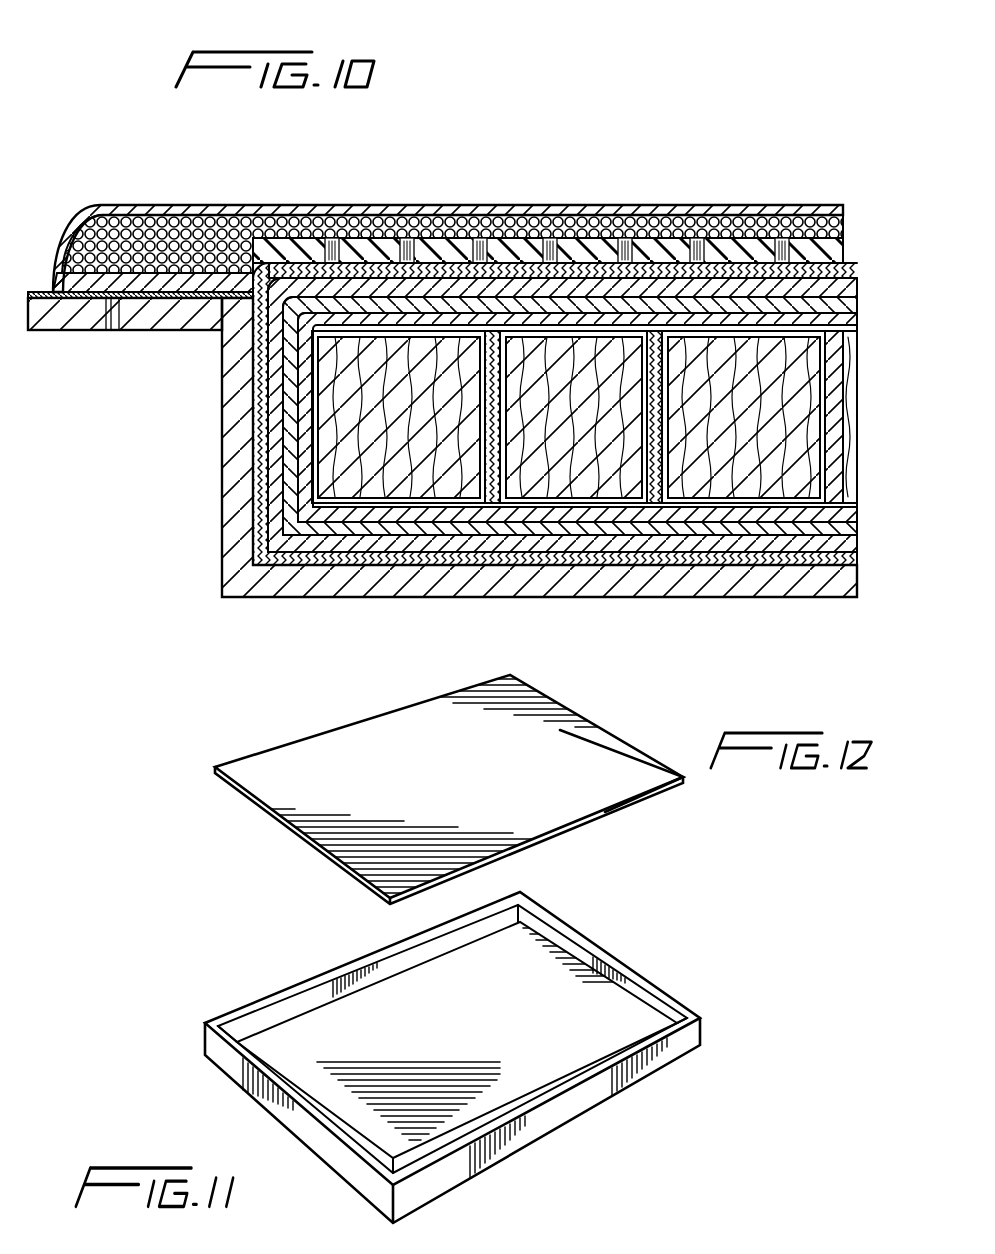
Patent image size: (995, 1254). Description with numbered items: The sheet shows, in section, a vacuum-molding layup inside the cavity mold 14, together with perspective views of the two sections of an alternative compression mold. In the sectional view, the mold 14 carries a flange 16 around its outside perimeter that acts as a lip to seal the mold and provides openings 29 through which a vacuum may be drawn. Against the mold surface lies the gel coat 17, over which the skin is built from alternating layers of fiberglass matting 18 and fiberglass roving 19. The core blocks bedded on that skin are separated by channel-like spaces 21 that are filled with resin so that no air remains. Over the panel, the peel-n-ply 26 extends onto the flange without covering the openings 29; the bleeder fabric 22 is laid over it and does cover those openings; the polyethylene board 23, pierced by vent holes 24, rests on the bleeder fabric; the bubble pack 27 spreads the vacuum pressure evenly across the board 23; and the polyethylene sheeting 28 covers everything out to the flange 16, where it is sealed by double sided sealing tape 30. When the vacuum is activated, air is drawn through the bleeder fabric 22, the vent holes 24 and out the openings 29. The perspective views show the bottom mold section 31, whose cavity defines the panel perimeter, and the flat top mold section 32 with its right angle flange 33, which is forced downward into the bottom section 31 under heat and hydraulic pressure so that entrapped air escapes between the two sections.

In FIG. 10, the mold 14 is at (226, 521).
In FIG. 10, the flange 16 is at (90, 333).
In FIG. 10, the gel coat 17 is at (767, 555).
In FIG. 10, the fiberglass matting 18 is at (715, 285).
In FIG. 10, the fiberglass roving 19 is at (755, 300).
In FIG. 10, the channel-like space 21 is at (640, 392).
In FIG. 10, the bleeder fabric 22 is at (432, 258).
In FIG. 10, the polyethylene board 23 is at (343, 218).
In FIG. 10, the vent holes 24 is at (405, 238).
In FIG. 10, the peel-n-ply 26 is at (580, 273).
In FIG. 10, the bubble pack 27 is at (200, 228).
In FIG. 10, the polyethylene sheeting 28 is at (123, 205).
In FIG. 10, the openings 29 is at (113, 333).
In FIG. 10, the double sided sealing tape 30 is at (58, 333).
In FIG. 11, the bottom mold section 31 is at (590, 1098).
In FIG. 12, the top mold section 32 is at (303, 768).
In FIG. 12, the right angle flange 33 is at (598, 728).